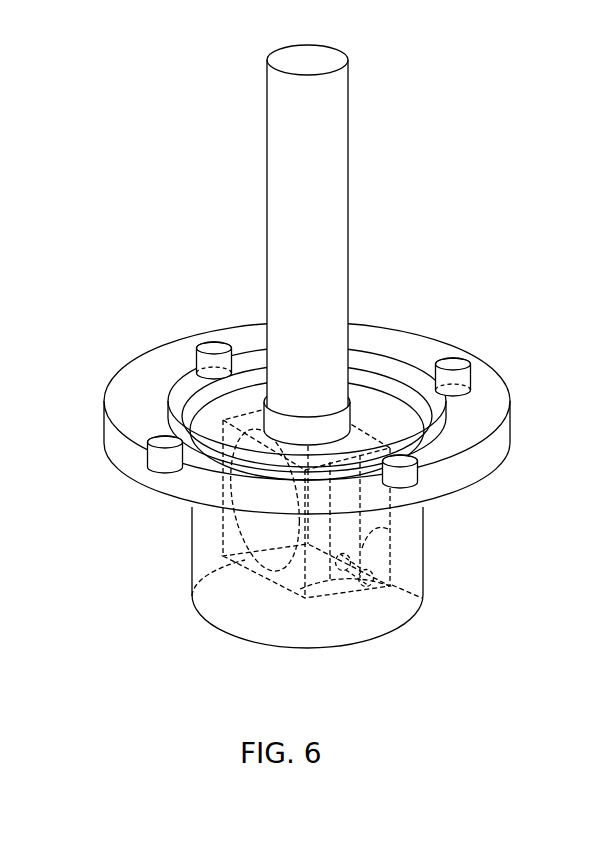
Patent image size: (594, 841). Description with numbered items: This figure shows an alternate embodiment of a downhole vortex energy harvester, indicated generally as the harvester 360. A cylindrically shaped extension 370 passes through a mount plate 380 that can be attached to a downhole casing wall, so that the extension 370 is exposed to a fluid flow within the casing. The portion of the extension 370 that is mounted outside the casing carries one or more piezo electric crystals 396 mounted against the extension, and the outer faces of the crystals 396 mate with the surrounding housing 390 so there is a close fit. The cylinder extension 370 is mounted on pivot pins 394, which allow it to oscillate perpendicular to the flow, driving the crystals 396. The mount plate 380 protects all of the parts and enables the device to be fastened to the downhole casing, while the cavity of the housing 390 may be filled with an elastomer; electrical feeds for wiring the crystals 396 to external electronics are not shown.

The vortex energy harvester 360 is at (187, 60).
The cylindrically shaped extension 370 is at (348, 160).
The mount plate 380 is at (168, 343).
The housing 390 is at (192, 517).
The pivot pins 394 is at (352, 575).
The piezo electric crystals 396 is at (300, 552).